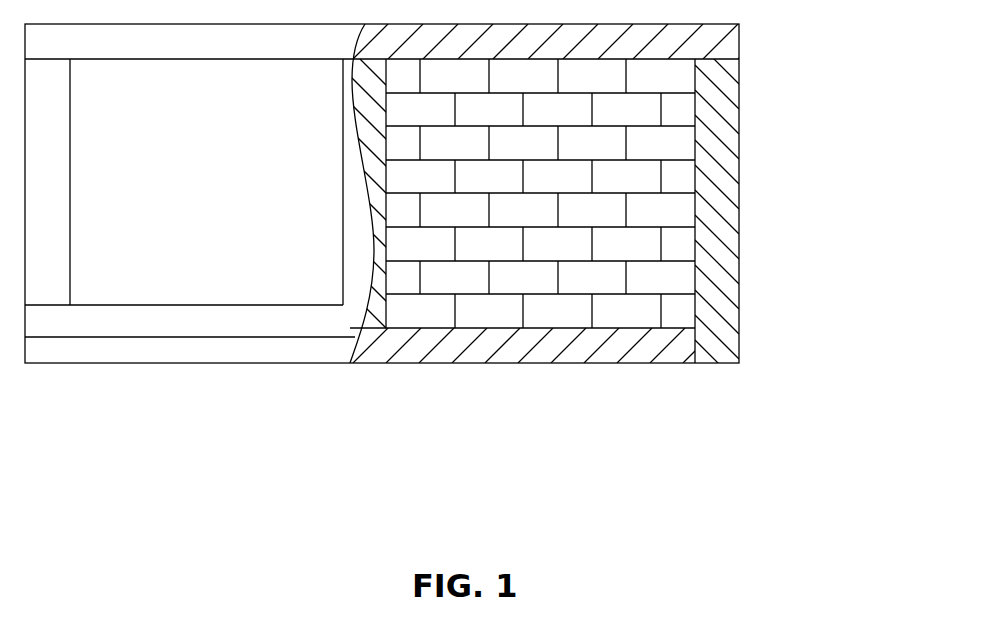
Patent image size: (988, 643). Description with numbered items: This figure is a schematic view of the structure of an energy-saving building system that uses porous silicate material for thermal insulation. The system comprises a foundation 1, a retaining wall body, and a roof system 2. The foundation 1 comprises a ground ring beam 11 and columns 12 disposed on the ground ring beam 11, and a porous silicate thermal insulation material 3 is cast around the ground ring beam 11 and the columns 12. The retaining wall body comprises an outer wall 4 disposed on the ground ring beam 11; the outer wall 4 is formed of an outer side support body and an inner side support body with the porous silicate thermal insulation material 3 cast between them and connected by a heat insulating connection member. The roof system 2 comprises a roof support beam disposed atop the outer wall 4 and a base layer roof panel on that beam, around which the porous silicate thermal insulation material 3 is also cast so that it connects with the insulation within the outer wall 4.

The foundation 1 is at (740, 362).
The ground ring beam 11 is at (627, 353).
The columns 12 is at (720, 252).
The roof system 2 is at (717, 45).
The porous silicate thermal insulation material 3 is at (105, 323).
The outer wall 4 is at (662, 160).